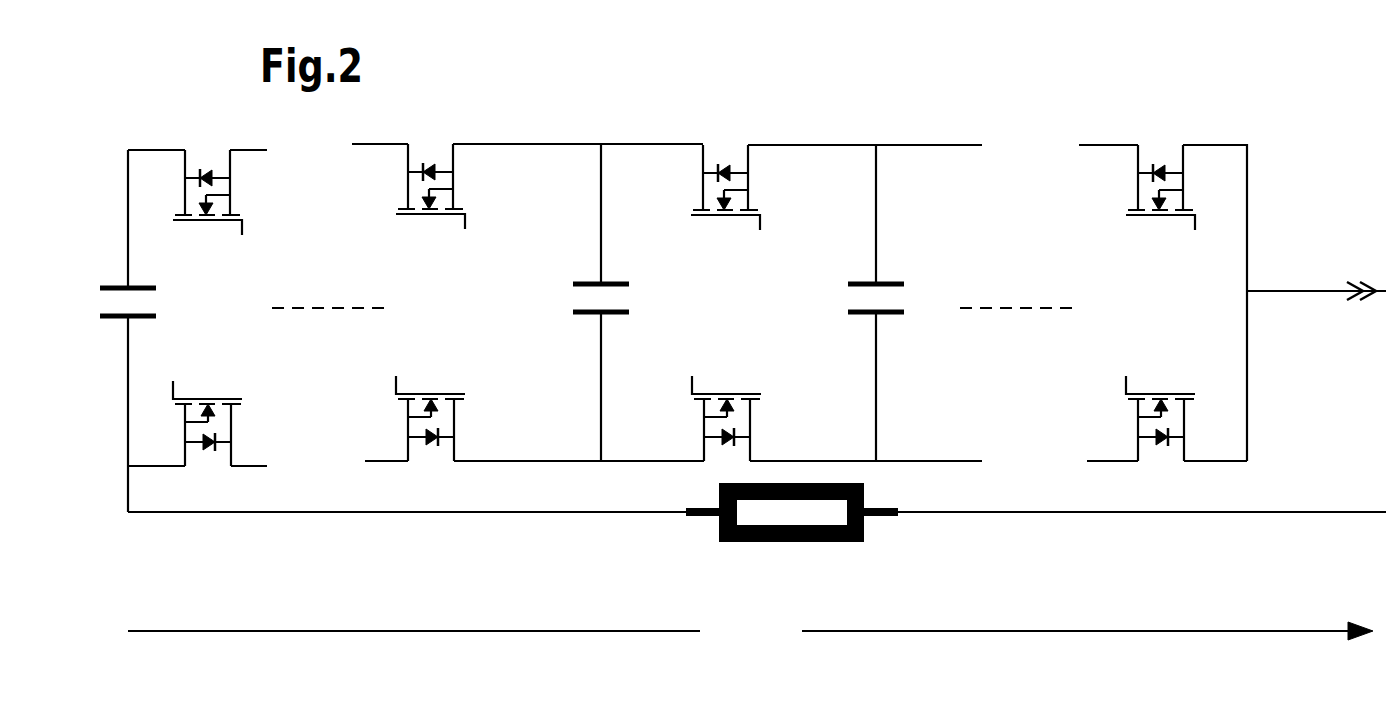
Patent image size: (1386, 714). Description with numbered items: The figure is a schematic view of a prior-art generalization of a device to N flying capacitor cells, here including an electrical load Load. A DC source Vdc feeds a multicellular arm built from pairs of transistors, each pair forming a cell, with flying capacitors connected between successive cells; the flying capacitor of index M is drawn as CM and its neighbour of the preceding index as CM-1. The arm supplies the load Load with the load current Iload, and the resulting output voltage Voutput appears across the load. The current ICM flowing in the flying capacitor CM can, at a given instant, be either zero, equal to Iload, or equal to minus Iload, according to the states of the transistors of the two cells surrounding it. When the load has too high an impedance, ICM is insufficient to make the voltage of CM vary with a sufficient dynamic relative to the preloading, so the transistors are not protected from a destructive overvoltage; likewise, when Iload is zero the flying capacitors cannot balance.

The DC supply voltage Vdc is at (77, 447).
The flying capacitor of index M CM is at (621, 302).
The flying capacitor of index M−1 CM-1 is at (900, 303).
The current of the flying capacitor of index M ICM is at (576, 257).
The load current Iload is at (1316, 272).
The electrical load Load is at (792, 531).
The output voltage Voutput is at (750, 631).